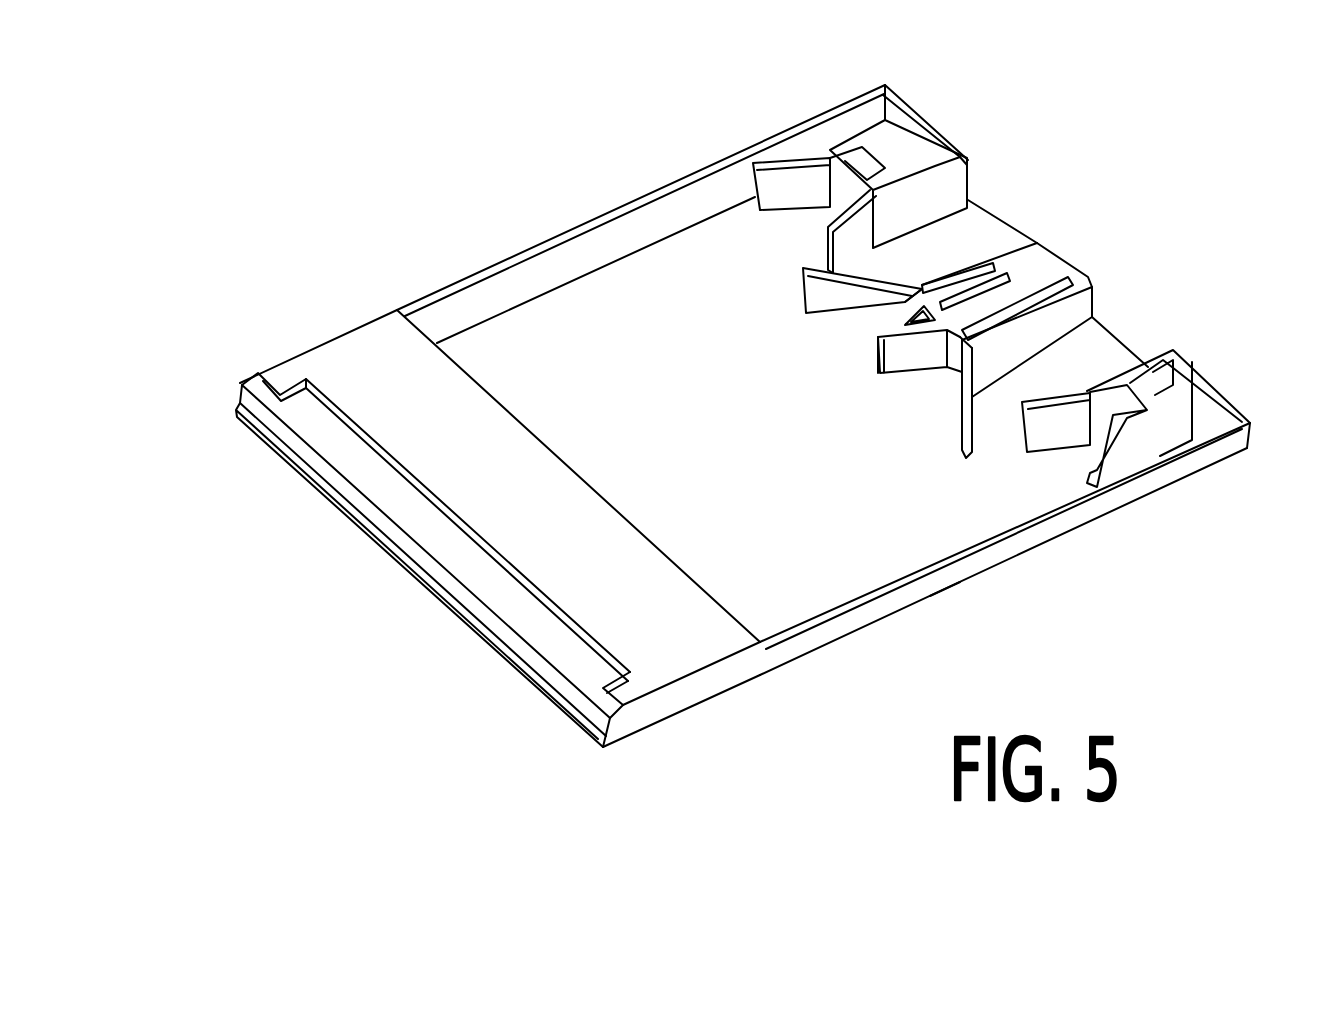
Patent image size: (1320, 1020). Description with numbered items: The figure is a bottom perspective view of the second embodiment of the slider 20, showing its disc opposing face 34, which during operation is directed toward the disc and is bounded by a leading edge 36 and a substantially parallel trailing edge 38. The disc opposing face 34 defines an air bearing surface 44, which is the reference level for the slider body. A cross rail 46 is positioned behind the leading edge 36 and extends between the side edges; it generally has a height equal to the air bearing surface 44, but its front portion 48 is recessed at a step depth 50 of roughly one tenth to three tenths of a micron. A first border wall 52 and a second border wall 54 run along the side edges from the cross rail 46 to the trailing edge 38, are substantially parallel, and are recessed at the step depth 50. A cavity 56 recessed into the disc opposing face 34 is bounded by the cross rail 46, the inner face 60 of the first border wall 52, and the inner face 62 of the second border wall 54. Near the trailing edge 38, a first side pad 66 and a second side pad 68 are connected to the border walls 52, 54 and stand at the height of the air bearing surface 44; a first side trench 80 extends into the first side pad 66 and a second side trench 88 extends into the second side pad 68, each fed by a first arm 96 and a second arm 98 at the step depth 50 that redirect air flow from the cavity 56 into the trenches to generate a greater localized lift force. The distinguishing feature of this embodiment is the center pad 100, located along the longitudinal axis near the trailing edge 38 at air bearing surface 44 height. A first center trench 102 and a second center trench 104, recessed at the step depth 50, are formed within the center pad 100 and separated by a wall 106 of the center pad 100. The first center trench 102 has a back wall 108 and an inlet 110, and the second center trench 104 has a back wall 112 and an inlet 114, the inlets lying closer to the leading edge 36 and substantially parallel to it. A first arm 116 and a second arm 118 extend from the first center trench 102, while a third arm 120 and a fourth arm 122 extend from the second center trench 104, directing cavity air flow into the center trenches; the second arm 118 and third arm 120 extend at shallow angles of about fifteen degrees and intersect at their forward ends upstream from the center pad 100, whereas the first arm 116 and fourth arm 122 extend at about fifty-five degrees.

The slider 20 is at (731, 434).
The disc opposing face 34 is at (694, 404).
The leading edge 36 is at (419, 575).
The trailing edge 38 is at (1006, 173).
The air bearing surface 44 is at (681, 699).
The cross rail 46 is at (304, 342).
The front portion 48 is at (415, 557).
The step depth 50 is at (623, 747).
The first border wall 52 is at (686, 214).
The second border wall 54 is at (1005, 536).
The cavity 56 is at (1003, 561).
The inner face 60 is at (566, 430).
The inner face 62 is at (974, 591).
The first side pad 66 is at (923, 166).
The second side pad 68 is at (1186, 403).
The first side trench 80 is at (846, 113).
The second side trench 88 is at (1261, 453).
The first arm 96 is at (914, 270).
The second arm 98 is at (968, 371).
The center pad 100 is at (1050, 294).
The first center trench 102 is at (936, 267).
The second center trench 104 is at (1068, 308).
The wall 106 is at (970, 263).
The back wall 108 is at (1016, 214).
The inlet 110 is at (821, 330).
The back wall 112 is at (1102, 270).
The inlet 114 is at (894, 391).
The first arm 116 is at (820, 305).
The second arm 118 is at (863, 345).
The third arm 120 is at (824, 387).
The fourth arm 122 is at (925, 413).